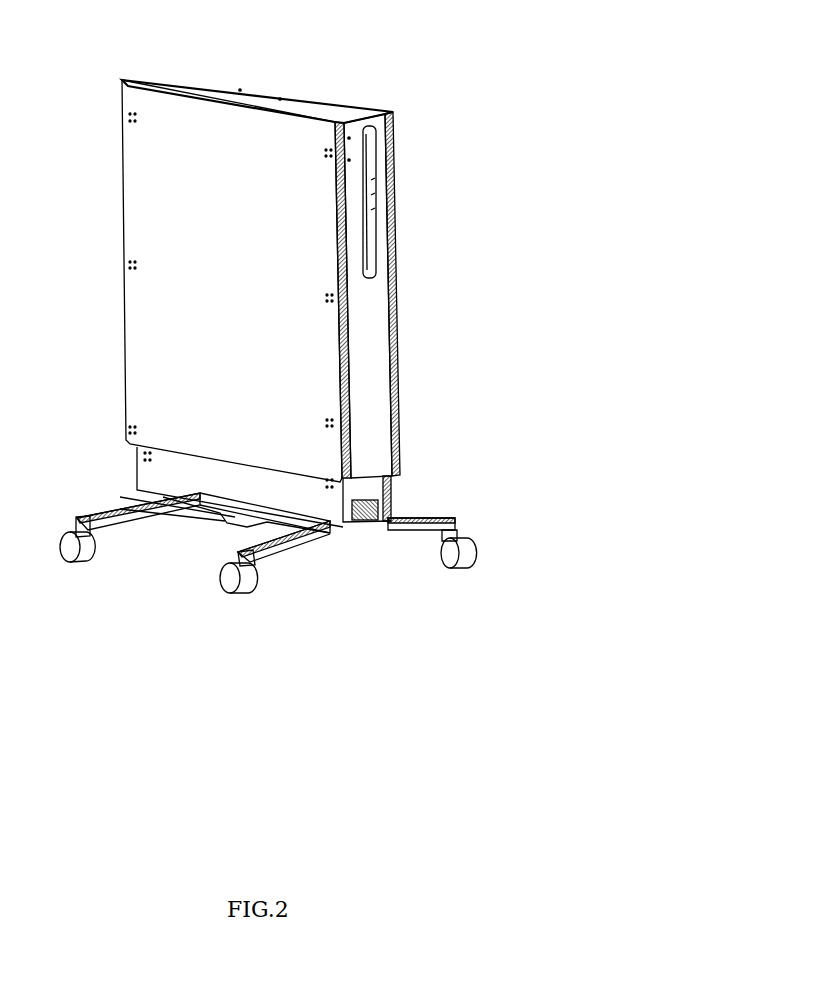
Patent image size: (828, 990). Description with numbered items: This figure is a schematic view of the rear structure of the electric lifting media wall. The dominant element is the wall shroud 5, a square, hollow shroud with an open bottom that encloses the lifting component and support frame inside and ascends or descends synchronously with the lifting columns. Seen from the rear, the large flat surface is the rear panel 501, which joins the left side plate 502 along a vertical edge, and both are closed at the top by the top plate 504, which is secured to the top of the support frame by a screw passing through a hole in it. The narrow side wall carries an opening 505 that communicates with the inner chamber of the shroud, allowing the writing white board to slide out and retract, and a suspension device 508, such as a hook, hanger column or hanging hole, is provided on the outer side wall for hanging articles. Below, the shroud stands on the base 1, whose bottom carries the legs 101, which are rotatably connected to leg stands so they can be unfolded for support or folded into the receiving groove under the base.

The wall shroud 5 is at (276, 252).
The rear panel 501 is at (176, 181).
The left side plate 502 is at (380, 373).
The top plate 504 is at (257, 72).
The opening 505 is at (419, 202).
The suspension device 508 is at (430, 270).
The base 1 is at (279, 532).
The leg 101 is at (443, 514).